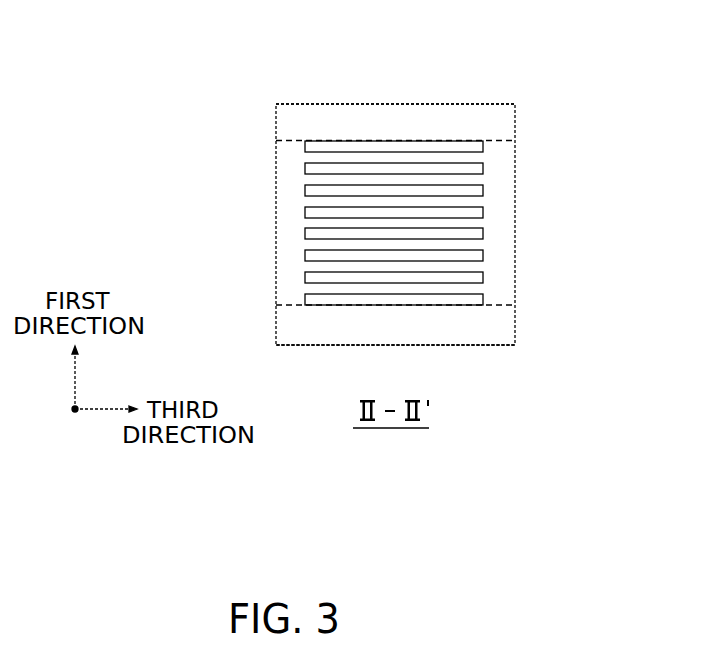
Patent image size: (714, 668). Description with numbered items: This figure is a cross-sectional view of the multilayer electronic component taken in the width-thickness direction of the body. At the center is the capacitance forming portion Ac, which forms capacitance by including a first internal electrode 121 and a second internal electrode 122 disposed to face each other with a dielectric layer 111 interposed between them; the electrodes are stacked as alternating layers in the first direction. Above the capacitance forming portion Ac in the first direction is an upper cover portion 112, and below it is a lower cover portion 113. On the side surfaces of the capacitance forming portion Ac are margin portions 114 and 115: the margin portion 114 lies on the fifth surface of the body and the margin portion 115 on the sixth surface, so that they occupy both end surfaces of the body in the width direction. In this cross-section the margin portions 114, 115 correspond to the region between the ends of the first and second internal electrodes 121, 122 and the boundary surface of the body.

The upper cover portion 112 is at (400, 118).
The first internal electrode 121 is at (484, 141).
The dielectric layer 111 is at (392, 205).
The second internal electrode 122 is at (486, 164).
The margin portion 115 is at (507, 247).
The lower cover portion 113 is at (507, 323).
The margin portion 114 is at (290, 260).
The capacitance forming portion Ac is at (392, 205).